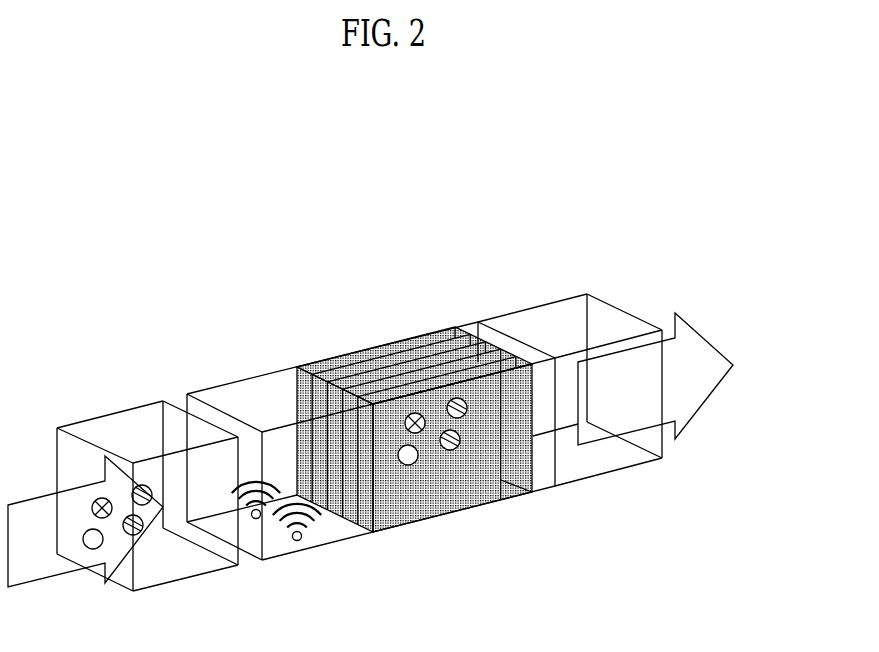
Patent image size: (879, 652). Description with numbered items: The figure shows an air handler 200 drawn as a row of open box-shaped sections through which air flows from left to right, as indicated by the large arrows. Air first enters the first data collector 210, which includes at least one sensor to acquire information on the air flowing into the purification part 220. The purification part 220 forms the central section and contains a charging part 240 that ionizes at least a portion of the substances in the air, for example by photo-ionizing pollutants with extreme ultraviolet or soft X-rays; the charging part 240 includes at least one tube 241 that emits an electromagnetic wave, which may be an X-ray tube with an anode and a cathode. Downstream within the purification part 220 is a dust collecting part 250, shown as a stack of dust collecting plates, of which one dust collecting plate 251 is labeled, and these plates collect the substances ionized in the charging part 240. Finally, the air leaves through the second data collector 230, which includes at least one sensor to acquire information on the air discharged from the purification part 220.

The air handler 200 is at (85, 306).
The first data collector 210 is at (187, 579).
The purification part 220 is at (371, 474).
The second data collector 230 is at (610, 472).
The charging part 240 is at (298, 554).
The tube 241 is at (251, 482).
The dust collecting part 250 is at (414, 453).
The dust collecting plate 251 is at (368, 348).